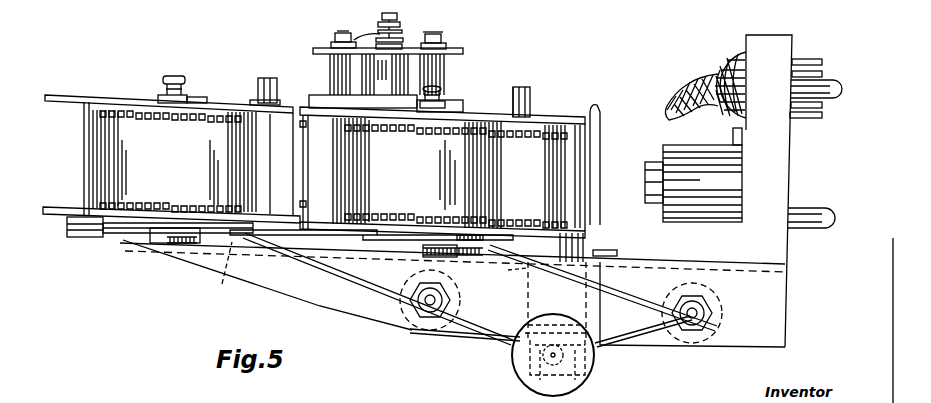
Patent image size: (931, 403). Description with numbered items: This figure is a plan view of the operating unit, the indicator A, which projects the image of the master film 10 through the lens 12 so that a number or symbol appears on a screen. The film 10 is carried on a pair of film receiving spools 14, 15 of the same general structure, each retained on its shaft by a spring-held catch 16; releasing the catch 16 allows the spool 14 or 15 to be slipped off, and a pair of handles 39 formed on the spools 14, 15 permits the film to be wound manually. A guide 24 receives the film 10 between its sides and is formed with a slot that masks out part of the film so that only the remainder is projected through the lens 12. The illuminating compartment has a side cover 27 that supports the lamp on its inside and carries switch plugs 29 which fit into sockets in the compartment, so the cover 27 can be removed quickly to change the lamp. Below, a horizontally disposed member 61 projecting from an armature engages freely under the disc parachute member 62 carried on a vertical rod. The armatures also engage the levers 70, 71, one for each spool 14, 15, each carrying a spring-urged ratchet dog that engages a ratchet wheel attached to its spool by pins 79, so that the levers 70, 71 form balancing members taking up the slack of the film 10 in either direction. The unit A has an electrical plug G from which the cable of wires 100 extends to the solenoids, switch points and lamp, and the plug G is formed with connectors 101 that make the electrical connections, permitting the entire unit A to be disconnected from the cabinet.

The master film 10 is at (575, 118).
The lens 12 is at (668, 172).
The film receiving spool 14 is at (232, 105).
The film receiving spool 15 is at (483, 124).
The catch 16 is at (185, 92).
The guide 24 is at (594, 198).
The side cover 27 is at (460, 103).
The switch plugs 29 is at (343, 36).
The handles 39 is at (275, 80).
The horizontally disposed member 61 is at (487, 335).
The disc parachute member 62 is at (530, 380).
The lever 70 is at (622, 290).
The lever 71 is at (363, 282).
The pins 79 is at (367, 272).
The cable of wires 100 is at (690, 82).
The connectors 101 is at (820, 70).
The indicator A is at (515, 110).
The electrical plug G is at (727, 52).